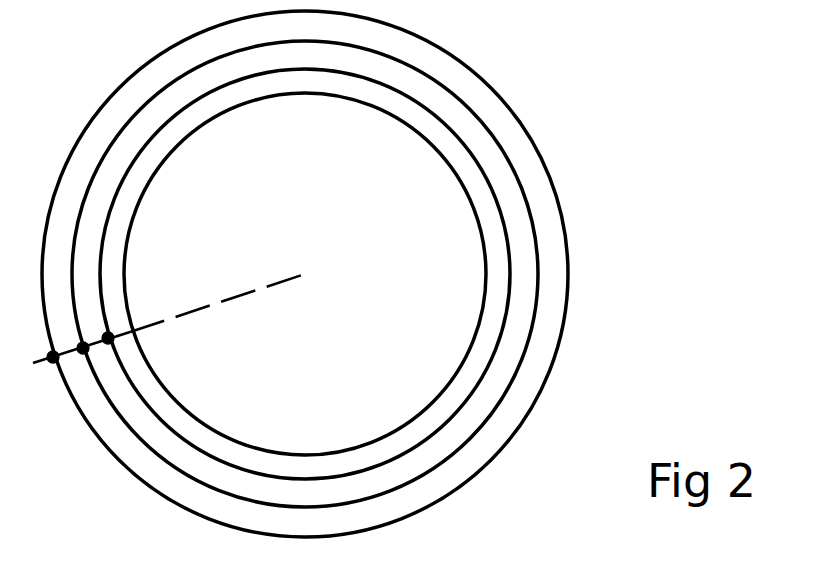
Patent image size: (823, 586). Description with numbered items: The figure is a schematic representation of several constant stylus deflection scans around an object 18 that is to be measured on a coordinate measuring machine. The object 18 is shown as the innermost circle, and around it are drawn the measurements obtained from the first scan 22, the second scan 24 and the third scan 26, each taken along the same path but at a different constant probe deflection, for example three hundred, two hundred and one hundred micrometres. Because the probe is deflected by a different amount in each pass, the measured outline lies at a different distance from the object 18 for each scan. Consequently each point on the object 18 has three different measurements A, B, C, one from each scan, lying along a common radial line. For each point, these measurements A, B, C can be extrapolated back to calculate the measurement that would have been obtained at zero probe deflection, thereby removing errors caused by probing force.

The object 18 is at (385, 352).
The first scan 22 is at (513, 97).
The second scan 24 is at (515, 168).
The third scan 26 is at (510, 250).
The first measurement A is at (100, 324).
The second measurement B is at (75, 339).
The third measurement C is at (43, 346).